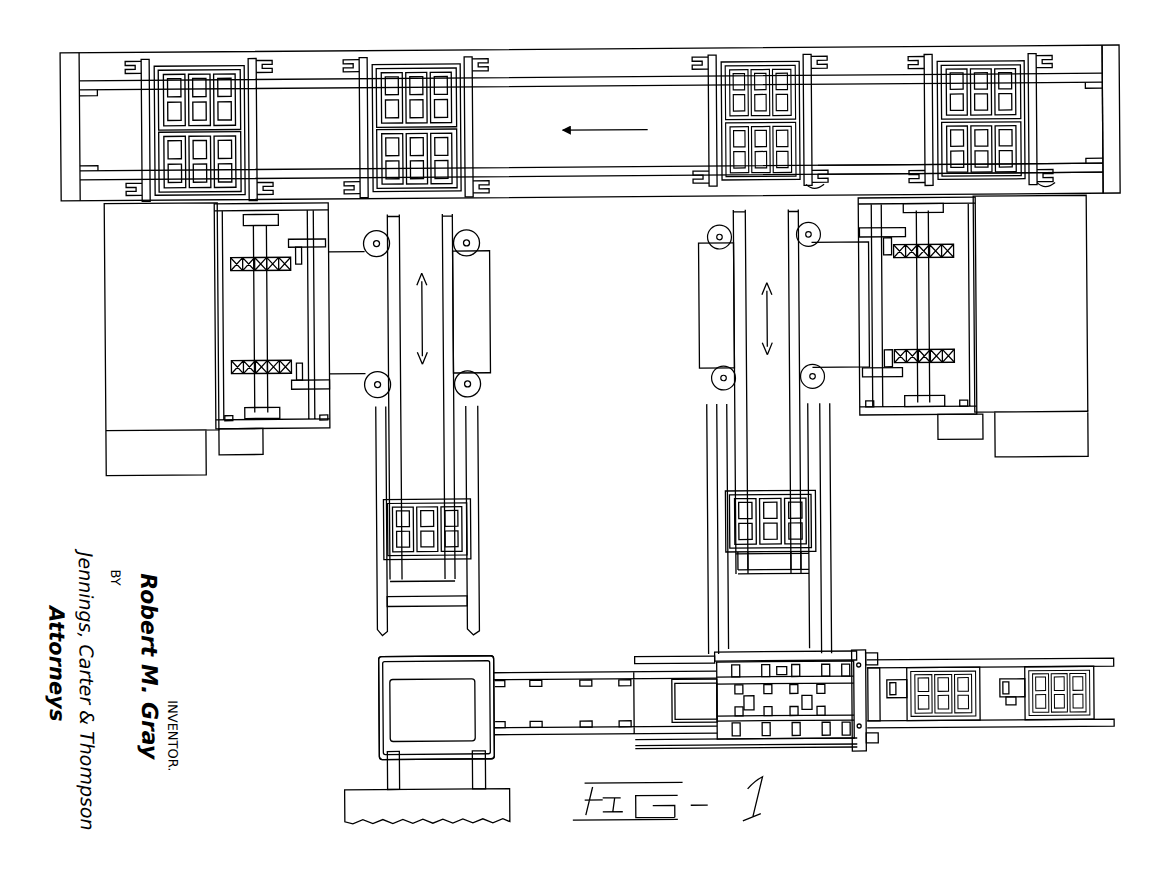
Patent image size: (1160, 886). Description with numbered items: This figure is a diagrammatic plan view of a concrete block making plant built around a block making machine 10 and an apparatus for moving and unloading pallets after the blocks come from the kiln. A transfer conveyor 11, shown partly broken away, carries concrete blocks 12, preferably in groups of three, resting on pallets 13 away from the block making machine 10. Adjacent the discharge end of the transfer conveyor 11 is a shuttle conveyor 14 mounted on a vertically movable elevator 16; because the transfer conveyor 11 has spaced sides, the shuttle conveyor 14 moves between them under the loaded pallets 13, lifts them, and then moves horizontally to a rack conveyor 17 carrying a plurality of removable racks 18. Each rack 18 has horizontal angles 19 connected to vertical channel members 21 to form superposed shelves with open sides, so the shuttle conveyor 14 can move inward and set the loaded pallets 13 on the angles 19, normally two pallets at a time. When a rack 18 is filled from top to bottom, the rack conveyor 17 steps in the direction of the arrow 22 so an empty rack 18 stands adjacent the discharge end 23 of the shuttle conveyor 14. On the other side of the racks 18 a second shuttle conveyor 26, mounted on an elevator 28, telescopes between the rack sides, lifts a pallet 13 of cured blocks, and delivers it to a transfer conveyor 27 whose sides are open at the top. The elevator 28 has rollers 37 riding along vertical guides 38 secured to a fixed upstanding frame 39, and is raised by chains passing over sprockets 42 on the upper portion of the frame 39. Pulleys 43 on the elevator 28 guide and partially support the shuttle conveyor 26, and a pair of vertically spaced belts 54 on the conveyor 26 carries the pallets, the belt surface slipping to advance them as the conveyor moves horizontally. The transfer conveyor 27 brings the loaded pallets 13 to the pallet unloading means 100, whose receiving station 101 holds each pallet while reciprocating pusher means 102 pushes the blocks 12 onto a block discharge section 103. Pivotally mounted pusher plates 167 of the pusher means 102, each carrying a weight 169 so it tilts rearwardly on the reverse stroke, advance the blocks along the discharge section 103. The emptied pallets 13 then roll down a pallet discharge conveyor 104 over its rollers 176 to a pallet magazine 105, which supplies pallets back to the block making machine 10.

The block making machine 10 is at (490, 798).
The transfer conveyor 11 is at (478, 593).
The concrete blocks 12 is at (1015, 108).
The pallets 13 is at (766, 62).
The shuttle conveyor 14 is at (470, 272).
The elevator 16 is at (490, 308).
The rack conveyor 17 is at (538, 183).
The racks 18 is at (262, 148).
The horizontal angles 19 is at (805, 116).
The vertical channel members 21 is at (492, 72).
The arrow 22 is at (600, 132).
The discharge end 23 is at (1092, 170).
The second shuttle conveyor 26 is at (732, 262).
The transfer conveyor 27 is at (706, 478).
The elevator 28 is at (700, 307).
The rollers 37 is at (868, 232).
The vertical guides 38 is at (905, 222).
The fixed upstanding frame 39 is at (876, 420).
The sprockets 42 is at (952, 256).
The pulleys 43 is at (812, 248).
The belts 54 is at (734, 218).
The pallet unloading means 100 is at (698, 655).
The receiving station 101 is at (785, 652).
The reciprocating pusher means 102 is at (878, 736).
The block discharge section 103 is at (975, 660).
The pallet discharge conveyor 104 is at (562, 672).
The pallet magazine 105 is at (487, 662).
The pusher plates 167 is at (898, 680).
The weight 169 is at (1008, 708).
The rollers 176 is at (618, 686).